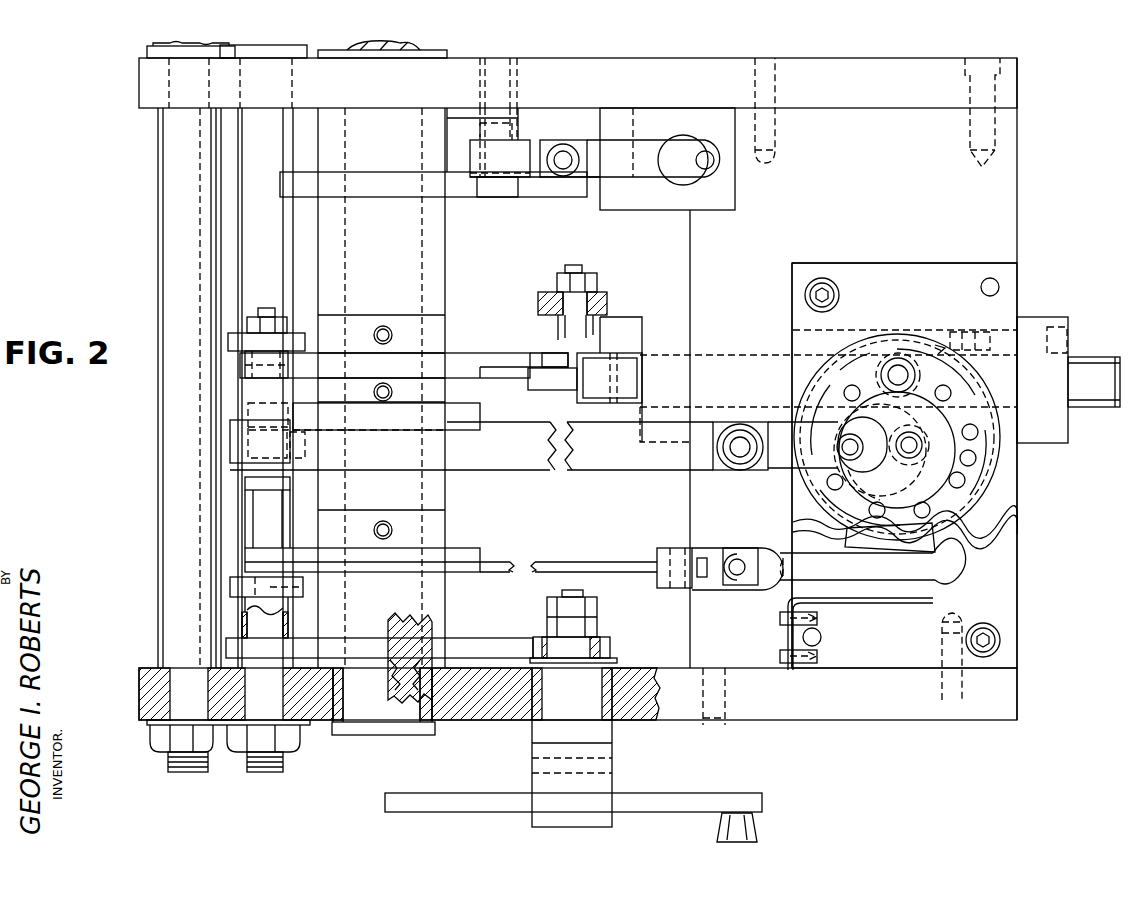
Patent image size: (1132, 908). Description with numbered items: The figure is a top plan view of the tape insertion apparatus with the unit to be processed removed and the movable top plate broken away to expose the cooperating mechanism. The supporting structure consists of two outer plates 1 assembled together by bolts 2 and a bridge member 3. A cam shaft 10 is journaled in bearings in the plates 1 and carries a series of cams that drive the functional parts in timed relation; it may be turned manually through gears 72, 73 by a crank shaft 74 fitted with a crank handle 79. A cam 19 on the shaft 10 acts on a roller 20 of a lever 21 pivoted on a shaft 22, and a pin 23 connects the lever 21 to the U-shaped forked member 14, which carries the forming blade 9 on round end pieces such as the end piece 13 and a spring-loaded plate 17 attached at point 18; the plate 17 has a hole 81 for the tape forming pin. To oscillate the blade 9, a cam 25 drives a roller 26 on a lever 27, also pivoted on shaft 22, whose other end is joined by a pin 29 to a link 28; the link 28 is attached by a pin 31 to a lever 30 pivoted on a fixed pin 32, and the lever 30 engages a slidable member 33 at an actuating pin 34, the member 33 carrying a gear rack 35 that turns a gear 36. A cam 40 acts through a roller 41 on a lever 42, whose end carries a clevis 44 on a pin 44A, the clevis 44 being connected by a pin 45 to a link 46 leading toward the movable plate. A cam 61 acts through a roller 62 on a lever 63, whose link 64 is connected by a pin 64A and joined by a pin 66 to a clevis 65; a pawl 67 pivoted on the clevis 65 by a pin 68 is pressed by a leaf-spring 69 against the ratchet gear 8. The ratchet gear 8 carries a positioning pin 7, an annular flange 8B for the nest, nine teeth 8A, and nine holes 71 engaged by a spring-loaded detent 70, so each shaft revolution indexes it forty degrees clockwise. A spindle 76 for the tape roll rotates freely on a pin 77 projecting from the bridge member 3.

The outer plates 1 is at (139, 90).
The bolts 2 is at (160, 297).
The bridge member 3 is at (1017, 213).
The positioning pin 7 is at (985, 470).
The ratchet gear 8 is at (1001, 511).
The teeth 8A is at (866, 538).
The annular flange 8B is at (975, 402).
The forming blade 9 is at (866, 445).
The cam shaft 10 is at (413, 277).
The round end piece 13 is at (880, 450).
The U-shaped forked member 14 is at (614, 470).
The spring-loaded plate 17 is at (780, 430).
The attachment point 18 is at (740, 437).
The cam 19 is at (477, 416).
The roller 20 is at (248, 408).
The lever 21 is at (307, 452).
The shaft 22 is at (250, 240).
The pin 23 is at (250, 452).
The cam 25 is at (470, 377).
The roller 26 is at (245, 372).
The lever 27 is at (228, 345).
The link 28 is at (495, 352).
The pin 29 is at (268, 308).
The lever 30 is at (567, 383).
The pin 31 is at (548, 352).
The fixed pin 32 is at (552, 328).
The slidable member 33 is at (621, 355).
The actuating pin 34 is at (603, 398).
The gear rack 35 is at (888, 385).
The gear 36 is at (864, 486).
The cam 40 is at (282, 183).
The roller 41 is at (510, 193).
The lever 42 is at (515, 158).
The clevis 44 is at (472, 143).
The pin 44A is at (505, 140).
The pin 45 is at (570, 168).
The link 46 is at (607, 152).
The cam 61 is at (458, 550).
The roller 62 is at (262, 550).
The lever 63 is at (232, 592).
The link 64 is at (582, 565).
The pin 64A is at (262, 587).
The clevis 65 is at (657, 552).
The pin 66 is at (682, 585).
The pawl 67 is at (953, 573).
The pin 68 is at (737, 560).
The leaf-spring 69 is at (868, 596).
The spring-loaded detent 70 is at (897, 432).
The holes 71 is at (962, 436).
The gear 72 is at (470, 640).
The gear 73 is at (612, 650).
The crank shaft 74 is at (614, 752).
The spindle 76 is at (915, 455).
The pin 77 is at (917, 440).
The crank handle 79 is at (707, 795).
The hole 81 is at (843, 448).